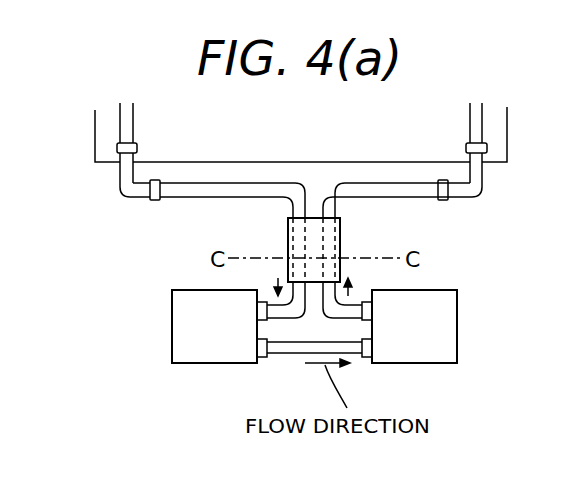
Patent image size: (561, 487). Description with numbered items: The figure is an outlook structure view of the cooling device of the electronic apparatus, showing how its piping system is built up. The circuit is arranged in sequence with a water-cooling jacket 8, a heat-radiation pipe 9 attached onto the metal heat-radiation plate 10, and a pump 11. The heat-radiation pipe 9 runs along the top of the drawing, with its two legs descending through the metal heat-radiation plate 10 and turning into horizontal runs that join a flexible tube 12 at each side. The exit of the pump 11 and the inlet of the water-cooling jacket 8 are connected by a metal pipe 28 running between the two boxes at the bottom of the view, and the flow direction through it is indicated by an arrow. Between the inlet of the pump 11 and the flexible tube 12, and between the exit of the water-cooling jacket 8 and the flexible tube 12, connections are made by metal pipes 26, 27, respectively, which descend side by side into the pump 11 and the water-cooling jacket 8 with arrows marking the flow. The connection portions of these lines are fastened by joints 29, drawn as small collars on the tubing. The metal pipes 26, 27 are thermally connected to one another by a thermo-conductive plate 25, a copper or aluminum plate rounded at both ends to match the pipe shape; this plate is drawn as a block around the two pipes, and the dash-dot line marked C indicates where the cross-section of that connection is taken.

The water-cooling jacket 8 is at (427, 363).
The heat-radiation pipe 9 is at (120, 115).
The metal heat-radiation plate 10 is at (100, 142).
The pump 11 is at (198, 363).
The flexible tube 12 is at (125, 182).
The thermo-conductive plate 25 is at (338, 245).
The metal pipe 26 is at (415, 190).
The metal pipe 27 is at (208, 192).
The metal pipe 28 is at (298, 353).
The joint 29 is at (150, 203).